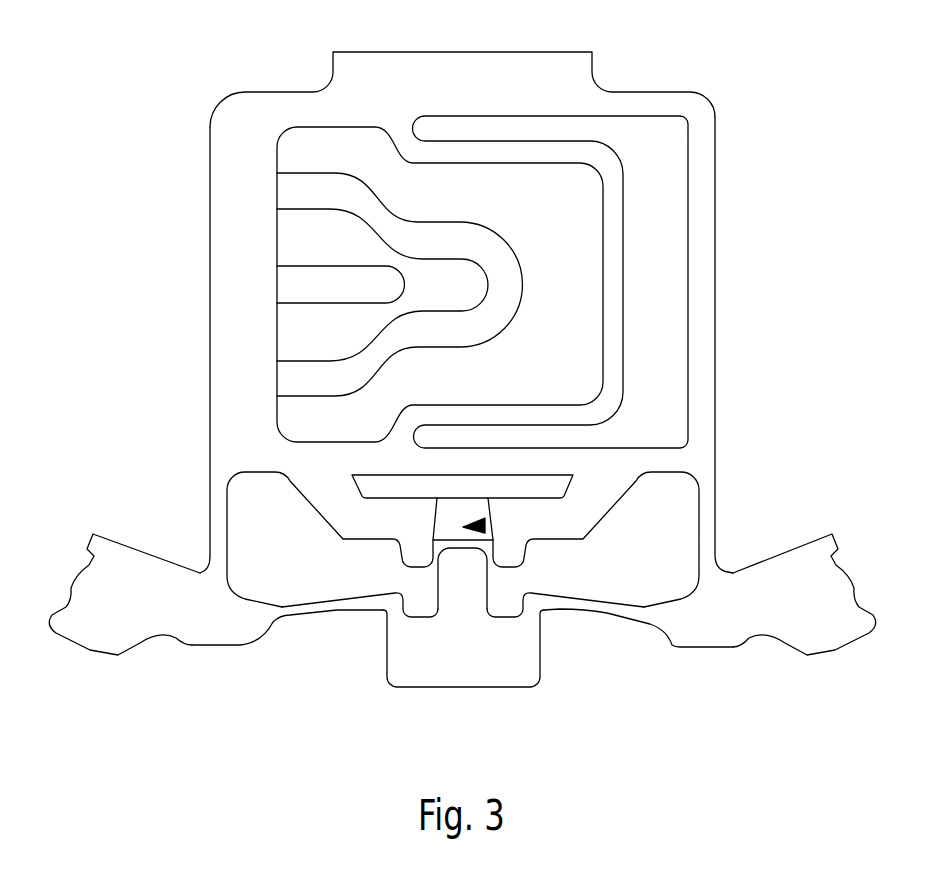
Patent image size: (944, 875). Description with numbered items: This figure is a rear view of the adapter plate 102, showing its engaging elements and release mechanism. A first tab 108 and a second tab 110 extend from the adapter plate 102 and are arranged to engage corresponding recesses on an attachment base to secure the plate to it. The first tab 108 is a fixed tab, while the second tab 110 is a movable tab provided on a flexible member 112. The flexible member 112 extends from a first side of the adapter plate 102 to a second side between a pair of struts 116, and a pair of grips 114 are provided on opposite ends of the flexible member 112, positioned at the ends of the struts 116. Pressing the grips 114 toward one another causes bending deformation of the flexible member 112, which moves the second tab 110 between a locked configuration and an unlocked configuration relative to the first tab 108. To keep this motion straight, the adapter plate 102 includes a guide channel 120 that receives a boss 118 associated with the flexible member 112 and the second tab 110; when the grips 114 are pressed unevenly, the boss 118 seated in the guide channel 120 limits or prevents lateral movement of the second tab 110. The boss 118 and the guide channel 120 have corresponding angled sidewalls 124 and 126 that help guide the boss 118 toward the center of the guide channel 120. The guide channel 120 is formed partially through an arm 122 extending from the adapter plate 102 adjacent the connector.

The adapter plate 102 is at (122, 146).
The first tab 108 is at (473, 63).
The second tab 110 is at (468, 674).
The flexible member 112 is at (594, 614).
The grips 114 is at (60, 600).
The struts 116 is at (213, 521).
The boss 118 is at (453, 597).
The guide channel 120 is at (485, 524).
The arm 122 is at (377, 522).
The angled sidewalls of the boss 124 is at (488, 583).
The angled sidewalls of the guide channel 126 is at (493, 546).